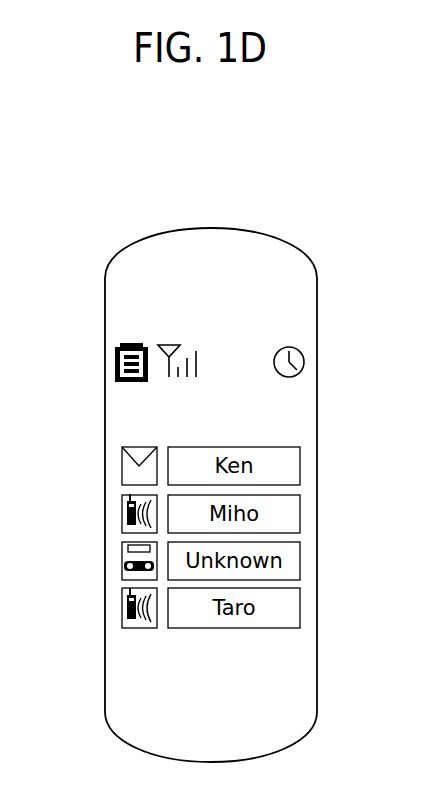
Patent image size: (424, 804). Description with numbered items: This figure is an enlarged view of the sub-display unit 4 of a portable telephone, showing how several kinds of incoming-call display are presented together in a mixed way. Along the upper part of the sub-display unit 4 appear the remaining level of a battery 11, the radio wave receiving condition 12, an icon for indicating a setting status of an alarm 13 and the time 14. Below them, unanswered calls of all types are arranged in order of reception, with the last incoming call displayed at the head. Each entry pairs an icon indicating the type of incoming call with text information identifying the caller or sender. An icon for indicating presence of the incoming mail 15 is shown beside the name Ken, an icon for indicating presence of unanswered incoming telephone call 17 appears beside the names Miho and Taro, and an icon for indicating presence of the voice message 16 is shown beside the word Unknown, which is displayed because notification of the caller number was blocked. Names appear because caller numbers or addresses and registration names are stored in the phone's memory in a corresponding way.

The sub-display unit 4 is at (170, 230).
The remaining level of a battery 11 is at (122, 343).
The radio wave receiving condition 12 is at (173, 343).
The icon for indicating a setting status of an alarm 13 is at (303, 349).
The time 14 is at (288, 415).
The icon for indicating presence of the incoming mail 15 is at (122, 465).
The icon for indicating presence of the voice message 16 is at (122, 563).
The icon for indicating presence of unanswered incoming telephone call 17 is at (122, 518).